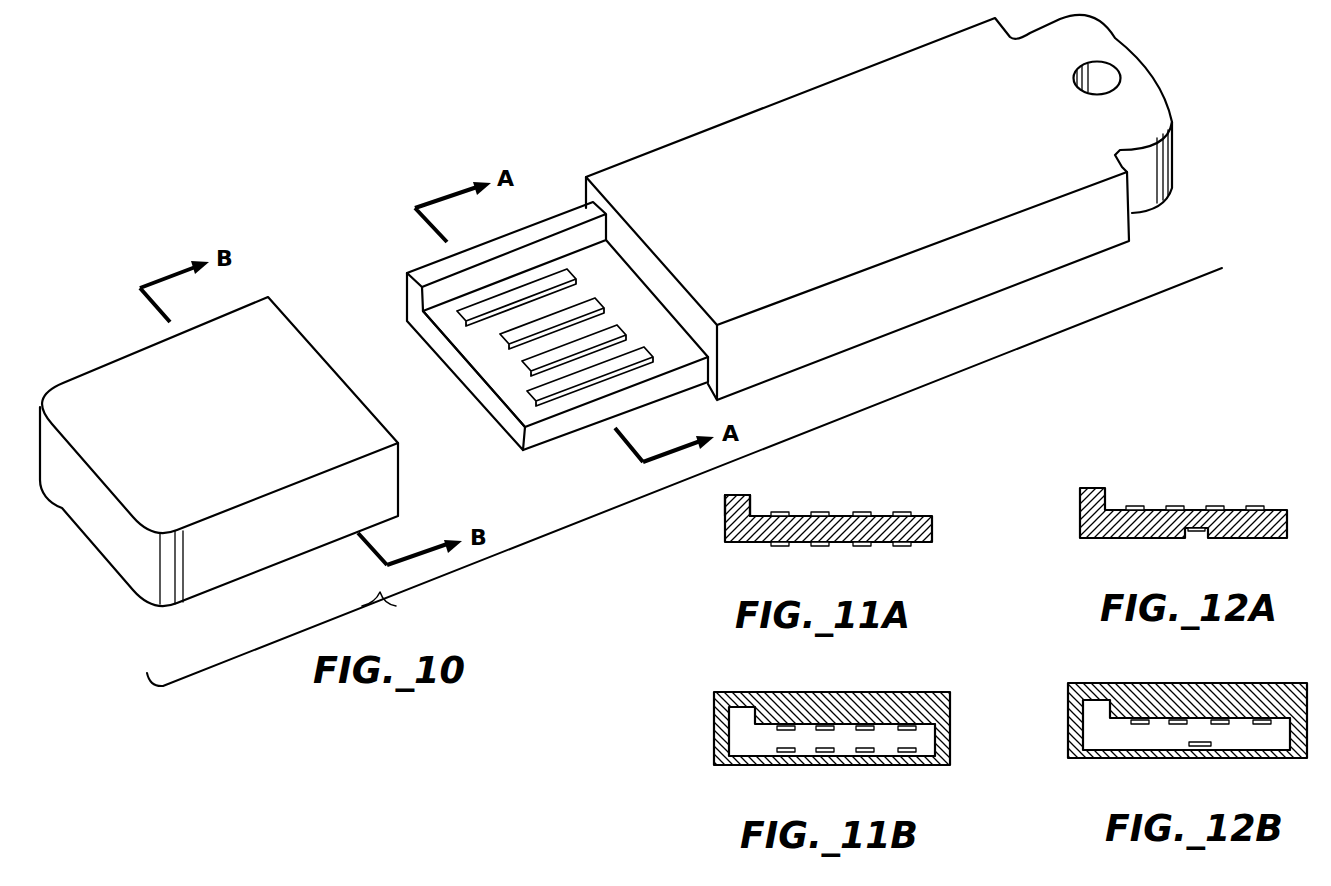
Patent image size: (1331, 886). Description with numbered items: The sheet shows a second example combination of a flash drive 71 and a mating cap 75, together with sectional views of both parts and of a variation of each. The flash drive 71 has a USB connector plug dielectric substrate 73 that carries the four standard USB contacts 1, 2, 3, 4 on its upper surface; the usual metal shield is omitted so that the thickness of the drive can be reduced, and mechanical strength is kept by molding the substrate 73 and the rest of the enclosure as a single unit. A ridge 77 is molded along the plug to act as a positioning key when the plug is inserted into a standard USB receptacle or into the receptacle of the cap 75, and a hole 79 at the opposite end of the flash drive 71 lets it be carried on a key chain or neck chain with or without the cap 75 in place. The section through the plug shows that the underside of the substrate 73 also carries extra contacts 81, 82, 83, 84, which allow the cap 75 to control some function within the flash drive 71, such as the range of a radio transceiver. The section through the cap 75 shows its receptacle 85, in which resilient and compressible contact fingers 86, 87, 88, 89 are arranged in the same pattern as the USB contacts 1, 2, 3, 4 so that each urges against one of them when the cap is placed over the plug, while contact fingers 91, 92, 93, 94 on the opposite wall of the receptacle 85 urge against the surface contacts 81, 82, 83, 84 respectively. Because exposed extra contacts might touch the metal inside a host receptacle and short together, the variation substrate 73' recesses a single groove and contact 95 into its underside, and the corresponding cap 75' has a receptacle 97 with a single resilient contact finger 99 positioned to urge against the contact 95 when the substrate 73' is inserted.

In FIG. 10, the flash drive 71 is at (789, 90).
In FIG. 10, the USB connector plug dielectric substrate 73 is at (557, 352).
In FIG. 11A, the USB connector plug dielectric substrate 73 is at (807, 532).
In FIG. 12A, the connector substrate 73' is at (1160, 526).
In FIG. 10, the cap 75 is at (219, 451).
In FIG. 11B, the cap 75 is at (800, 750).
In FIG. 12B, the cap 75' is at (1186, 741).
In FIG. 10, the ridge 77 is at (421, 270).
In FIG. 11A, the ridge 77 is at (740, 494).
In FIG. 10, the hole 79 is at (1105, 72).
In FIG. 10, the USB plug contact 1 is at (527, 394).
In FIG. 11A, the USB plug contact 1 is at (906, 512).
In FIG. 12A, the USB plug contact 1 is at (1260, 507).
In FIG. 10, the USB plug contact 2 is at (522, 365).
In FIG. 11A, the USB plug contact 2 is at (866, 512).
In FIG. 12A, the USB plug contact 2 is at (1220, 507).
In FIG. 10, the USB plug contact 3 is at (500, 338).
In FIG. 11A, the USB plug contact 3 is at (824, 512).
In FIG. 12A, the USB plug contact 3 is at (1178, 507).
In FIG. 10, the USB plug contact 4 is at (456, 319).
In FIG. 11A, the USB plug contact 4 is at (787, 512).
In FIG. 12A, the USB plug contact 4 is at (1140, 507).
In FIG. 11A, the additional contact 81 is at (782, 546).
In FIG. 11A, the additional contact 82 is at (825, 546).
In FIG. 11A, the additional contact 83 is at (860, 546).
In FIG. 11A, the additional contact 84 is at (905, 546).
In FIG. 11B, the receptacle 85 is at (930, 736).
In FIG. 11B, the contact finger 86 is at (788, 727).
In FIG. 12B, the contact finger 86 is at (1142, 720).
In FIG. 11B, the contact finger 87 is at (827, 727).
In FIG. 12B, the contact finger 87 is at (1181, 720).
In FIG. 11B, the contact finger 88 is at (867, 727).
In FIG. 12B, the contact finger 88 is at (1222, 720).
In FIG. 11B, the contact finger 89 is at (908, 727).
In FIG. 12B, the contact finger 89 is at (1263, 720).
In FIG. 11B, the contact finger 91 is at (786, 753).
In FIG. 11B, the contact finger 92 is at (826, 753).
In FIG. 11B, the contact finger 93 is at (862, 753).
In FIG. 11B, the contact finger 94 is at (908, 753).
In FIG. 12A, the groove and contact 95 is at (1195, 531).
In FIG. 12B, the receptacle 97 is at (1247, 740).
In FIG. 12B, the resilient contact finger 99 is at (1200, 750).